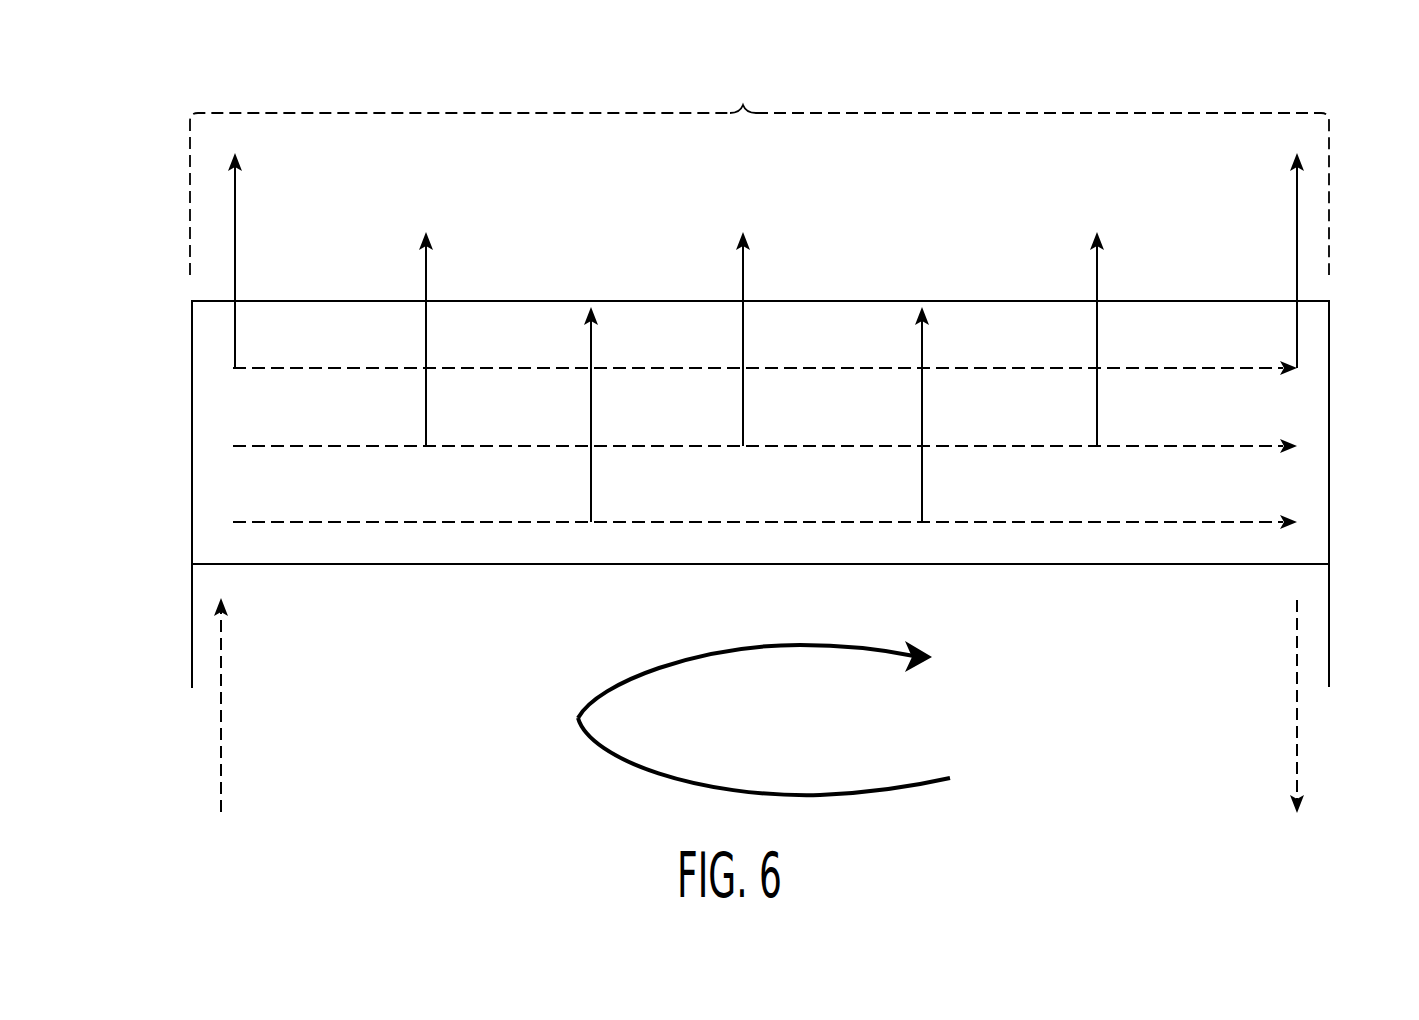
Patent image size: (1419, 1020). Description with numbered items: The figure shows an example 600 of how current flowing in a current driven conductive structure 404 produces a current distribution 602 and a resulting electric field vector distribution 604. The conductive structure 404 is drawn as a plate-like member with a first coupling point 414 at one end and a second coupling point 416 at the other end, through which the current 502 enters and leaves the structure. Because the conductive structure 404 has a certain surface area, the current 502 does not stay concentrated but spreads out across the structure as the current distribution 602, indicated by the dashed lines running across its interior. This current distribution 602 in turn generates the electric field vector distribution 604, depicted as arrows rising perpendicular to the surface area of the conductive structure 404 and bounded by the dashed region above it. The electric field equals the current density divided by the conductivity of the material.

The example 600 is at (90, 101).
The electric field vector distribution 604 is at (759, 172).
The current distribution 602 is at (177, 528).
The current driven conductive structure 404 is at (745, 564).
The first coupling point 414 is at (192, 644).
The second coupling point 416 is at (1331, 630).
The current 502 is at (222, 750).